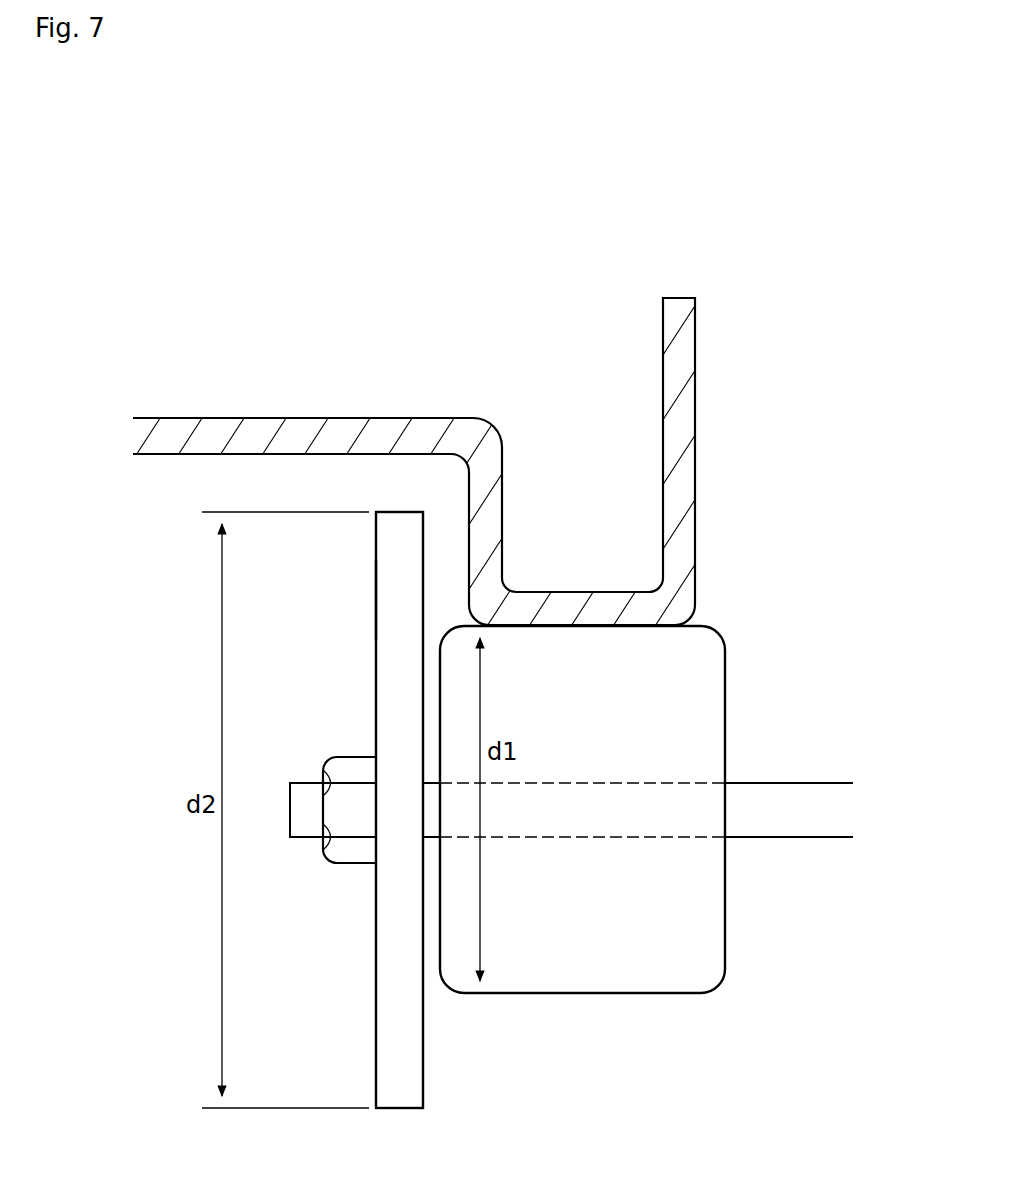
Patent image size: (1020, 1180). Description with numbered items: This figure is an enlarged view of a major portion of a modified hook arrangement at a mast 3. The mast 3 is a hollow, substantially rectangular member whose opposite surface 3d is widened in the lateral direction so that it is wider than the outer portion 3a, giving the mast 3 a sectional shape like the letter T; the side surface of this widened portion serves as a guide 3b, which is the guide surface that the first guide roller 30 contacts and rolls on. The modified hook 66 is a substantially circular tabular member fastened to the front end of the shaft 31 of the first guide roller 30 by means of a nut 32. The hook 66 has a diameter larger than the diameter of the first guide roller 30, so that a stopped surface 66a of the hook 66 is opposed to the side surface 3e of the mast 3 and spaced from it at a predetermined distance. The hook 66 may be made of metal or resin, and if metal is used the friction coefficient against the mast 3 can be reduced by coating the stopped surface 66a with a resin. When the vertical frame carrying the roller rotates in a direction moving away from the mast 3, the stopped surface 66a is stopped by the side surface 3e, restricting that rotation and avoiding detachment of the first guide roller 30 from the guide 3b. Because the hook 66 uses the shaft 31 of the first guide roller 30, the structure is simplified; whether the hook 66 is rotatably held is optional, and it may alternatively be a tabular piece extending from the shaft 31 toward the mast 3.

The mast 3 is at (716, 409).
The outer portion 3a is at (286, 418).
The guide 3b is at (588, 627).
The opposite surface 3d is at (697, 345).
The side surface 3e is at (470, 572).
The first guide roller 30 is at (726, 690).
The shaft 31 is at (783, 798).
The nut 32 is at (350, 865).
The hook 66 is at (390, 653).
The stopped surface 66a is at (420, 590).